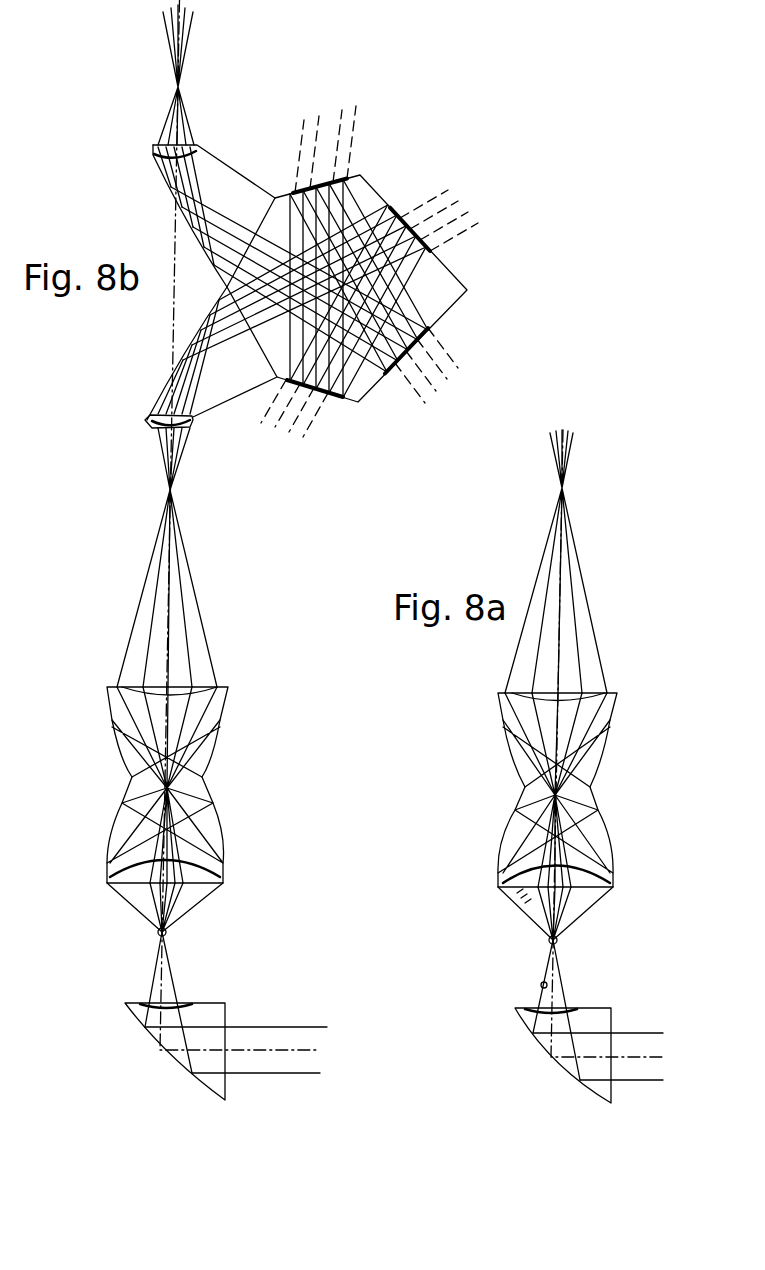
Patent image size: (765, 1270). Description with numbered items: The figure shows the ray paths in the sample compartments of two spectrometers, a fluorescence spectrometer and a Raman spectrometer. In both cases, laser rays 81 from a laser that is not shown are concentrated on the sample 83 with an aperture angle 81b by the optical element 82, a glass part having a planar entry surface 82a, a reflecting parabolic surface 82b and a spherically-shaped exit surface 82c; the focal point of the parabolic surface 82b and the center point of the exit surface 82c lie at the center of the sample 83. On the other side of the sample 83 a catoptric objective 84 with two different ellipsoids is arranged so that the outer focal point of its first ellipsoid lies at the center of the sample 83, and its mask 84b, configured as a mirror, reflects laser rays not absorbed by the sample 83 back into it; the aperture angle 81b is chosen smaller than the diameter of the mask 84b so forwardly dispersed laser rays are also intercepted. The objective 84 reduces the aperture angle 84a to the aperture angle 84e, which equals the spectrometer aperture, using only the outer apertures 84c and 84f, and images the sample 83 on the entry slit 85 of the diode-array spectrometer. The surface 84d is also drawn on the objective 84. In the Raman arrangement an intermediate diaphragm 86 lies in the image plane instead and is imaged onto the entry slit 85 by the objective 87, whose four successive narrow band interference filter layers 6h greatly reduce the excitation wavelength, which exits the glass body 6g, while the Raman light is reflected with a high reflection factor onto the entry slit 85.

In FIG. 8b, the laser rays 81 is at (308, 1060).
In FIG. 8a, the laser rays 81 is at (661, 1050).
In FIG. 8a, the aperture angle 81b is at (544, 982).
In FIG. 8b, the optical element 82 is at (139, 1038).
In FIG. 8a, the optical element 82 is at (550, 1063).
In FIG. 8a, the planar entry surface 82a is at (613, 1068).
In FIG. 8a, the reflecting parabolic surface 82b is at (543, 1047).
In FIG. 8a, the spherically-shaped exit surface 82c is at (560, 1005).
In FIG. 8b, the sample 83 is at (167, 933).
In FIG. 8a, the sample 83 is at (560, 938).
In FIG. 8b, the catoptric objective 84 is at (218, 780).
In FIG. 8a, the catoptric objective 84 is at (608, 788).
In FIG. 8a, the aperture angle 84a is at (532, 912).
In FIG. 8a, the mask 84b is at (606, 863).
In FIG. 8a, the outer aperture 84c is at (520, 896).
In FIG. 8a, the lens surface 84d is at (573, 692).
In FIG. 8b, the aperture angle 84e is at (167, 590).
In FIG. 8a, the aperture angle 84e is at (536, 592).
In FIG. 8a, the outer aperture 84f is at (547, 562).
In FIG. 8b, the entry slit 85 is at (150, 87).
In FIG. 8a, the entry slit 85 is at (533, 488).
In FIG. 8b, the intermediate diaphragm 86 is at (140, 482).
In FIG. 8b, the objective 87 is at (322, 149).
In FIG. 8b, the glass body 6g is at (450, 260).
In FIG. 8b, the narrow band interference filter layers 6h is at (343, 178).